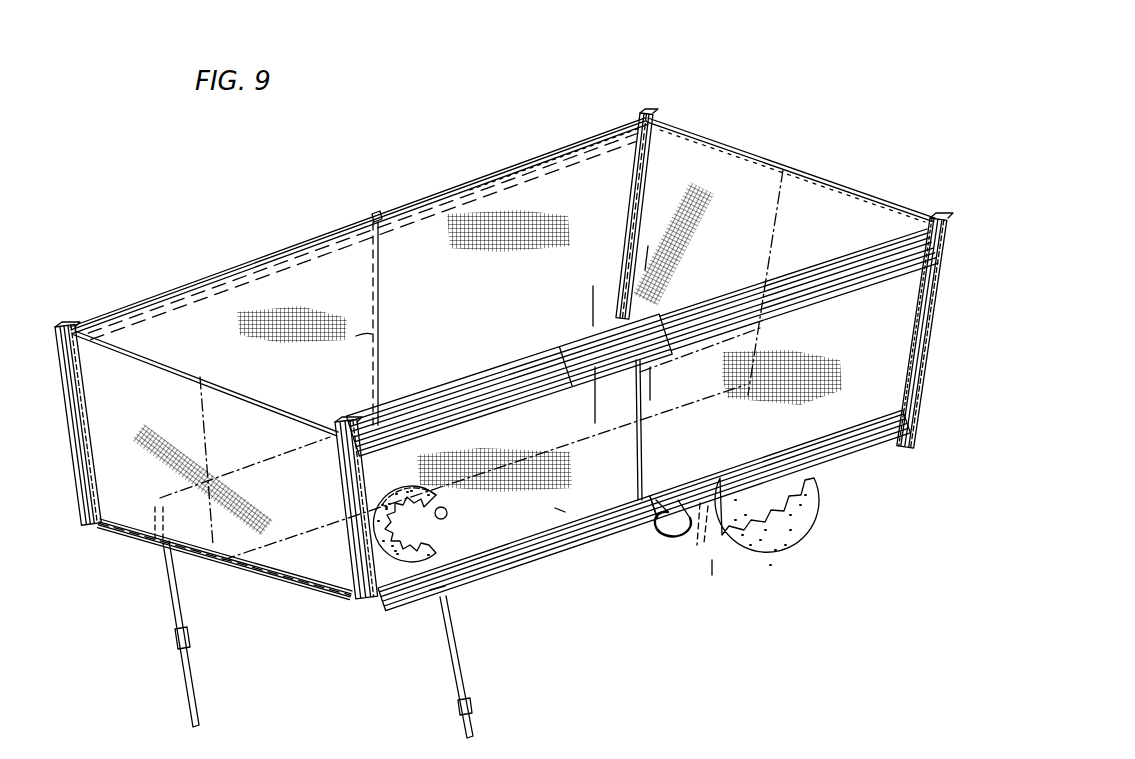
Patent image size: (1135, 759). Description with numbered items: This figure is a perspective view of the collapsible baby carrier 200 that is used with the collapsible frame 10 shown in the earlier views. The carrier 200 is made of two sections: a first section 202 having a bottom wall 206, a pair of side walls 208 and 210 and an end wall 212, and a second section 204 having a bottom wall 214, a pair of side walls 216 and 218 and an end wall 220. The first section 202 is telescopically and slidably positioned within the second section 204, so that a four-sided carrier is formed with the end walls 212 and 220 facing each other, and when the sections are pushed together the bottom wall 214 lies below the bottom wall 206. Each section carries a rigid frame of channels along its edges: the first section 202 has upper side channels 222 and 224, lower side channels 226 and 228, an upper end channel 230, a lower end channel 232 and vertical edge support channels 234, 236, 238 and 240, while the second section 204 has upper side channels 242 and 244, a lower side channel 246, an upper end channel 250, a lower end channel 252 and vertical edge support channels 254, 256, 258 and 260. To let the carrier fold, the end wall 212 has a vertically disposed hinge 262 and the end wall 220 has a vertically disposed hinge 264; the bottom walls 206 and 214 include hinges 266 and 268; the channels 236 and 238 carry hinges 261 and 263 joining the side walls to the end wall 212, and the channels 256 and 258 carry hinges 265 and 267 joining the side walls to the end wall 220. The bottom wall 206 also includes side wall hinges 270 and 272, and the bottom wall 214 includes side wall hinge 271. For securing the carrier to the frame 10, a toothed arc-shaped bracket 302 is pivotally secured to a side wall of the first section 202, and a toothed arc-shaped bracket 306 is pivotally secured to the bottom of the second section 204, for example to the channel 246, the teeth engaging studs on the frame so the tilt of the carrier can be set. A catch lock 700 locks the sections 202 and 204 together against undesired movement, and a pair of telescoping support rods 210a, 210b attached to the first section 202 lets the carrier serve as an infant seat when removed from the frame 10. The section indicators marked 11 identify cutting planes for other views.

The collapsible baby carrier 200 is at (340, 188).
The first section 202 is at (484, 603).
The second section 204 is at (826, 556).
The bottom wall 206 is at (315, 562).
The side wall 208 is at (560, 513).
The side wall 210 is at (190, 287).
The telescoping support rod 210a is at (453, 703).
The telescoping support rod 210b is at (170, 647).
The end wall 212 is at (210, 463).
The bottom wall 214 is at (712, 572).
The side wall 216 is at (905, 378).
The side wall 218 is at (550, 170).
The end wall 220 is at (793, 200).
The upper side channel 222 is at (517, 380).
The upper side channel 224 is at (287, 252).
The lower side channel 226 is at (543, 568).
The lower side channel 228 is at (133, 524).
The upper end channel 230 is at (213, 380).
The lower end channel 232 is at (250, 578).
The vertical edge support channel 234 is at (565, 480).
The vertical edge support channel 236 is at (374, 635).
The vertical edge support channel 238 is at (77, 482).
The vertical edge support channel 240 is at (370, 332).
The upper side channel 242 is at (850, 265).
The upper side channel 244 is at (463, 184).
The lower side channel 246 is at (752, 483).
The upper end channel 250 is at (707, 138).
The lower end channel 252 is at (838, 404).
The vertical edge support channel 254 is at (654, 464).
The vertical edge support channel 256 is at (914, 383).
The vertical edge support channel 258 is at (660, 178).
The vertical edge support channel 260 is at (379, 291).
The hinge 261 is at (356, 585).
The vertically disposed hinge 262 is at (198, 556).
The hinge 263 is at (73, 408).
The vertically disposed hinge 264 is at (770, 226).
The hinge 265 is at (918, 328).
The hinge 266 is at (272, 524).
The hinge 267 is at (632, 140).
The hinge 268 is at (705, 405).
The side wall hinge 270 is at (437, 592).
The side wall hinge 271 is at (705, 520).
The side wall hinge 272 is at (268, 462).
The arc-shaped bracket 302 is at (413, 547).
The arc-shaped bracket 306 is at (812, 487).
The catch lock 700 is at (660, 540).
The collapsible frame 10 is at (578, 407).
The section line FIG. 11 is at (644, 393).